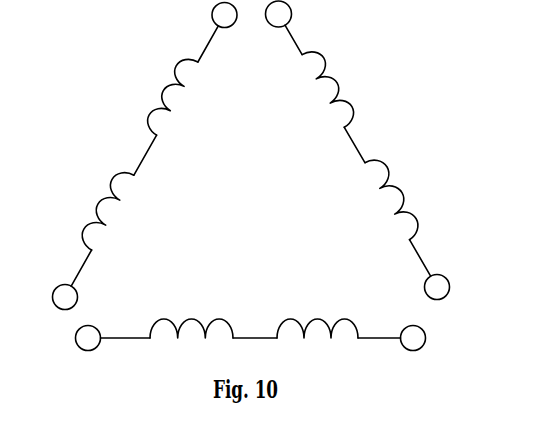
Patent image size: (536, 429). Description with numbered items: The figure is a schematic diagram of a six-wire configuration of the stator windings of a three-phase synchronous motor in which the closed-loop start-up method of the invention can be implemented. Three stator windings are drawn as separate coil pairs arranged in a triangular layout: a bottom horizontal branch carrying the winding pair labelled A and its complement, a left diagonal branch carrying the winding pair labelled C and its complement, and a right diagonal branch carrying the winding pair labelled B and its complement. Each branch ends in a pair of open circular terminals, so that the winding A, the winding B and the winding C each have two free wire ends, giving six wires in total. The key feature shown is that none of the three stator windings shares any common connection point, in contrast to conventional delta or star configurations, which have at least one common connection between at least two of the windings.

The winding A of bottom branch A is at (317, 309).
The winding B of right branch B is at (334, 89).
The winding C of left branch C is at (102, 211).